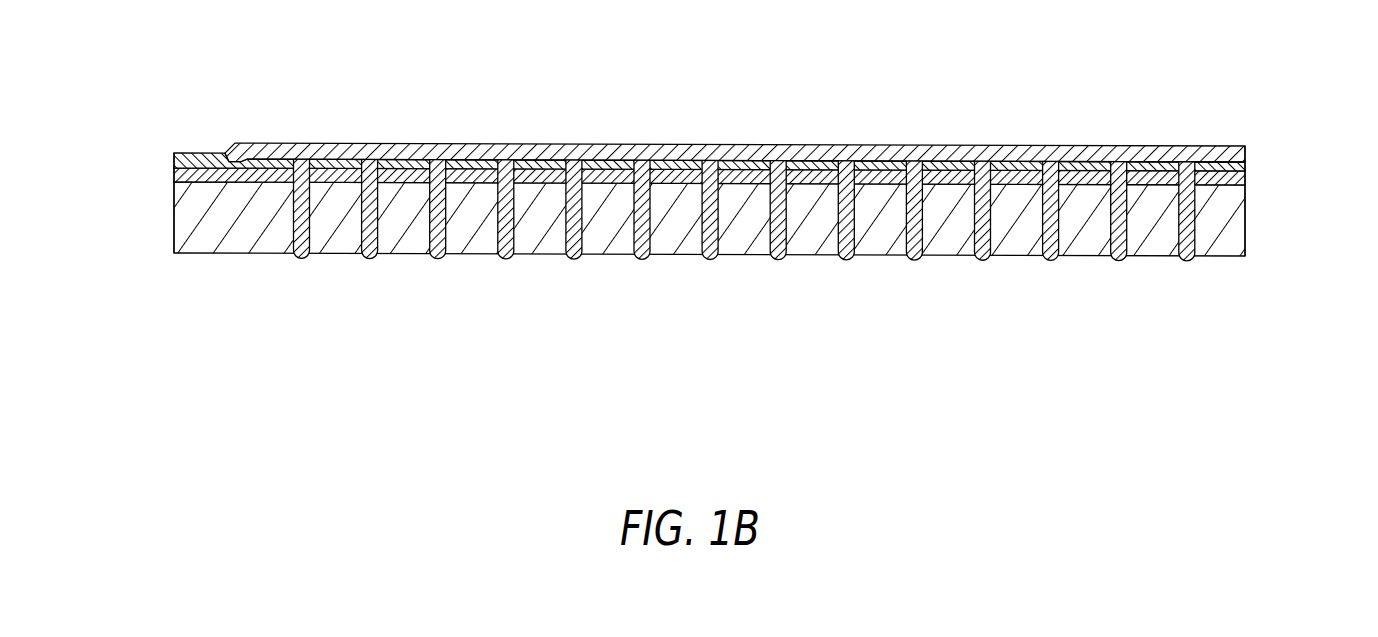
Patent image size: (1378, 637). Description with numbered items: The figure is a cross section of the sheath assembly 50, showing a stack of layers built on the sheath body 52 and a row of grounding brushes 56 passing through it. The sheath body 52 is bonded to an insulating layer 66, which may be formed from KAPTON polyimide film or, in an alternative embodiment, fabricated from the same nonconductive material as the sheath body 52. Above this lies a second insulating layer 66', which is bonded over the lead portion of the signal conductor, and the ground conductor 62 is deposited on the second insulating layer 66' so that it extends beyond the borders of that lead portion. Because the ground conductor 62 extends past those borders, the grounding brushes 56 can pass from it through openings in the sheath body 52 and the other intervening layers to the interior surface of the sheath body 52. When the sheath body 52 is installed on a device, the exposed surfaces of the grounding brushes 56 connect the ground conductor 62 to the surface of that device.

The sheath assembly 50 is at (132, 172).
The sheath body 52 is at (230, 247).
The grounding brushes 56 is at (709, 239).
The ground conductor 62 is at (1245, 158).
The insulating layer 66 is at (742, 215).
The second insulating layer 66' is at (761, 115).